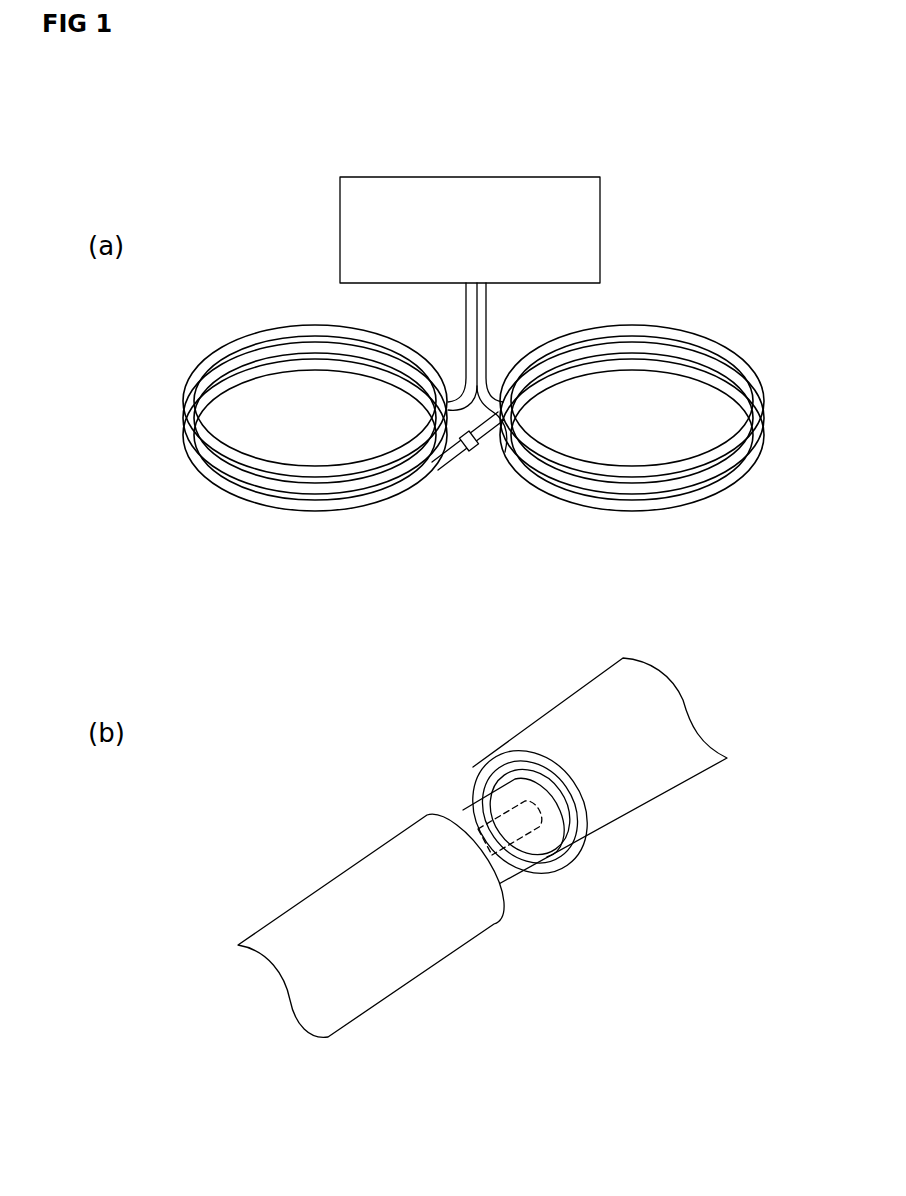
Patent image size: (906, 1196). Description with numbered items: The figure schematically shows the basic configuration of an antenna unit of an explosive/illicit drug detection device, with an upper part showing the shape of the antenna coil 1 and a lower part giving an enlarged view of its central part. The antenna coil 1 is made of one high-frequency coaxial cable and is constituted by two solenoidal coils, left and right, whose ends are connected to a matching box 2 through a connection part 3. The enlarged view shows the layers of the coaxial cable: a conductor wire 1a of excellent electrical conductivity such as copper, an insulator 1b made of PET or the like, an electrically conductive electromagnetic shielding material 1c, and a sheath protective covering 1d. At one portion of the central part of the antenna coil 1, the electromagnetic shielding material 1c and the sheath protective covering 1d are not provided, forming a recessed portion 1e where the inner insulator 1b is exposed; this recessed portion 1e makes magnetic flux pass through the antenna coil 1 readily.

The antenna coil 1 is at (577, 308).
The matching box 2 is at (521, 196).
The connection part 3 is at (468, 327).
The conductor wire 1a is at (462, 806).
The insulator 1b is at (541, 845).
The electromagnetic shielding material 1c is at (573, 832).
The sheath protective covering 1d is at (561, 726).
The recessed portion 1e is at (480, 456).